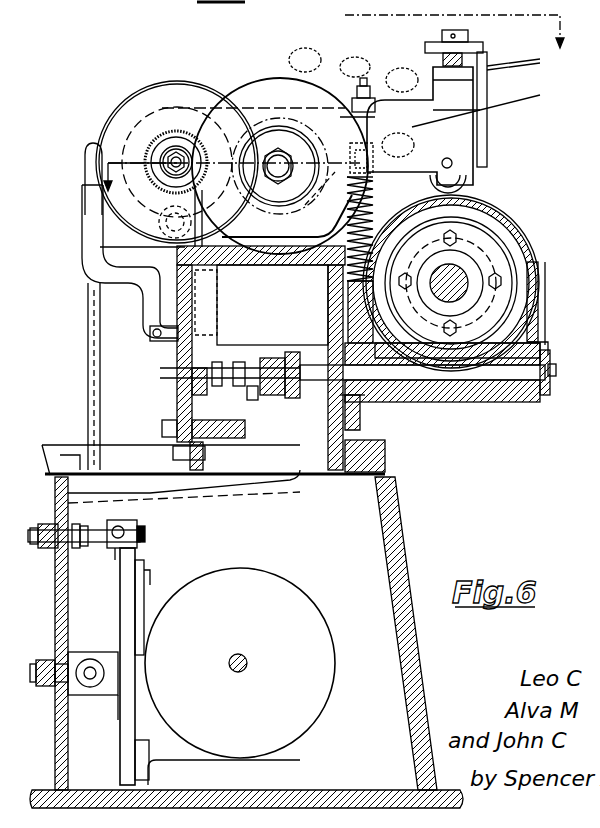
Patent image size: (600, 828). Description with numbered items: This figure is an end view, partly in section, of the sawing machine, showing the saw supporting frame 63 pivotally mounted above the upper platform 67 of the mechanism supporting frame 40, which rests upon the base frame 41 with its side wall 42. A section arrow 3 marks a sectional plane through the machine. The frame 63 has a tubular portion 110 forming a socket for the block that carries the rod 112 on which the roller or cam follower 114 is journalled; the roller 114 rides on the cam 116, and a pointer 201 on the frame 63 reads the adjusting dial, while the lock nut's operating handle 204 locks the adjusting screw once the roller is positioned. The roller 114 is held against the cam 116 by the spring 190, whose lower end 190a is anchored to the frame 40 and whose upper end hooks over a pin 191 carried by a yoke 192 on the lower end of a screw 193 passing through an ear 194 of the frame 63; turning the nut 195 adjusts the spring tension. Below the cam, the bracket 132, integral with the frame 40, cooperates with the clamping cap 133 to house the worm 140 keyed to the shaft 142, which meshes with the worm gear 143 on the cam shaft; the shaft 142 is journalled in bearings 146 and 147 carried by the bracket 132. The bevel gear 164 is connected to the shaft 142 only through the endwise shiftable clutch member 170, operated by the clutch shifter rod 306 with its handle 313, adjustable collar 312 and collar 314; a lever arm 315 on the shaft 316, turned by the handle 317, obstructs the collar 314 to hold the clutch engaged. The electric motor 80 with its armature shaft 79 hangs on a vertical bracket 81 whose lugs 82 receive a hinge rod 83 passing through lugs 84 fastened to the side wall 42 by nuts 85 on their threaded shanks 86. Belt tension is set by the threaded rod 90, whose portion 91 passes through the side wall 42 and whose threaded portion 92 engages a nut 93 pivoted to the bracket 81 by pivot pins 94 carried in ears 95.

The section line 3 is at (338, 103).
The handle 313 is at (118, 285).
The spring 190 is at (375, 212).
The lower end of spring 190a is at (345, 410).
The tubular portion 110 is at (475, 122).
The pointer 201 is at (487, 90).
The nut 195 is at (370, 82).
The operating handle 204 is at (528, 59).
The saw supporting frame 63 is at (562, 106).
The rod 112 is at (450, 160).
The roller or cam follower 114 is at (464, 182).
The ear 194 is at (357, 87).
The pin 191 is at (348, 163).
The screw 193 is at (372, 108).
The yoke 192 is at (382, 153).
The cam 116 is at (502, 205).
The clamping cap 133 is at (512, 232).
The worm gear 143 is at (512, 258).
The bracket 132 is at (558, 318).
The bearing 146 is at (400, 400).
The worm 140 is at (468, 390).
The shaft 142 is at (447, 372).
The bearing 147 is at (520, 392).
The upper platform 67 is at (280, 255).
The clutch member 170 is at (320, 345).
The clutch shifter rod 306 is at (272, 358).
The bevel gear 164 is at (292, 352).
The collar 314 is at (240, 362).
The adjustable collar 312 is at (222, 355).
The lever arm 315 is at (258, 400).
The shaft 316 is at (232, 438).
The handle 317 is at (165, 438).
The mechanism supporting frame 40 is at (432, 465).
The side wall 42 is at (55, 610).
The base frame 41 is at (396, 522).
The electric motor 80 is at (245, 572).
The armature shaft 79 is at (245, 658).
The vertical bracket 81 is at (120, 600).
The pivot pins 94 is at (144, 560).
The threaded rod 90 is at (95, 548).
The portion 91 is at (58, 514).
The threaded portion 92 is at (145, 532).
The nut 93 is at (120, 526).
The ears 95 is at (113, 562).
The lugs 84 is at (85, 652).
The hinge rod 83 is at (90, 680).
The lugs 82 is at (110, 680).
The threaded shanks 86 is at (40, 660).
The nuts 85 is at (38, 686).